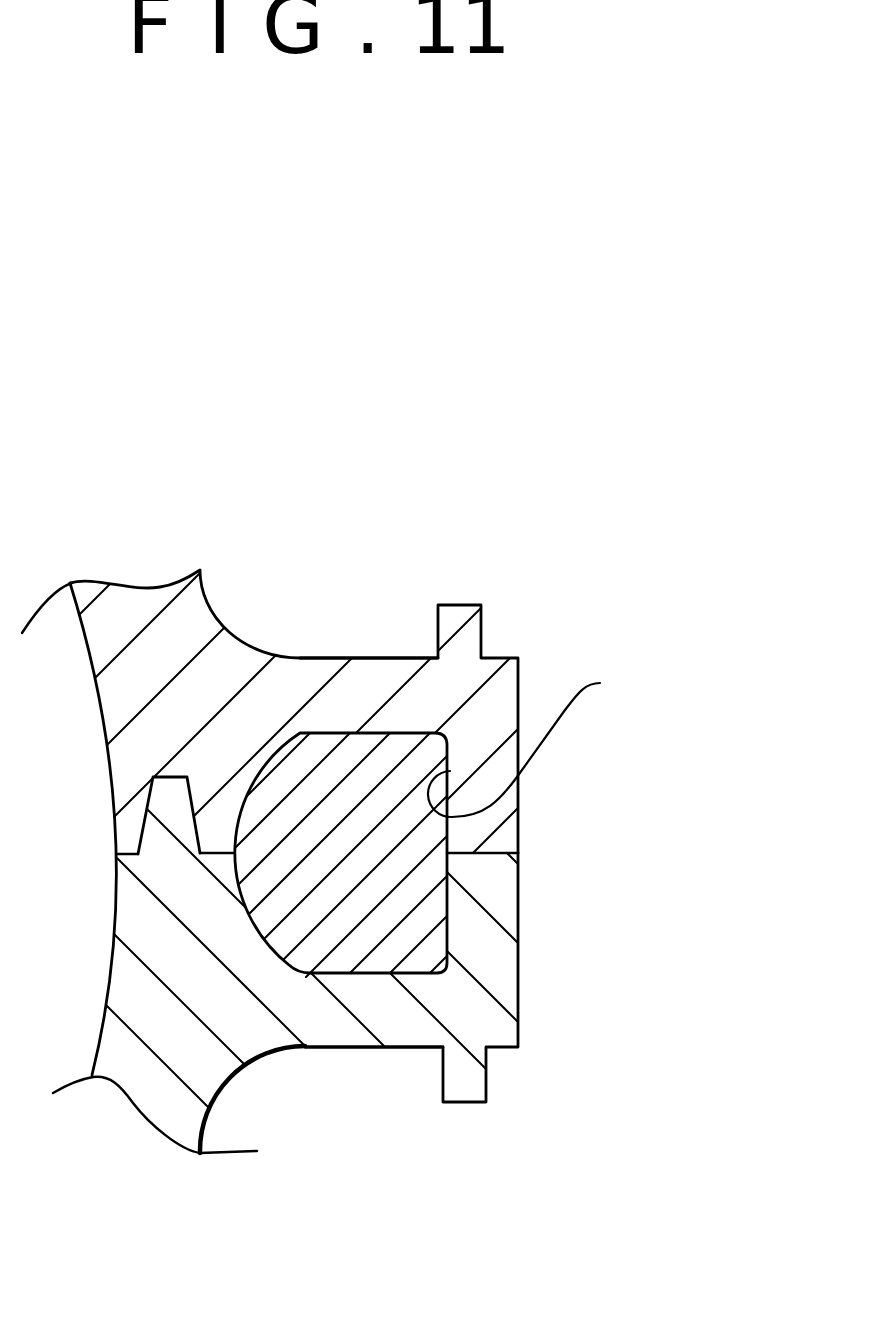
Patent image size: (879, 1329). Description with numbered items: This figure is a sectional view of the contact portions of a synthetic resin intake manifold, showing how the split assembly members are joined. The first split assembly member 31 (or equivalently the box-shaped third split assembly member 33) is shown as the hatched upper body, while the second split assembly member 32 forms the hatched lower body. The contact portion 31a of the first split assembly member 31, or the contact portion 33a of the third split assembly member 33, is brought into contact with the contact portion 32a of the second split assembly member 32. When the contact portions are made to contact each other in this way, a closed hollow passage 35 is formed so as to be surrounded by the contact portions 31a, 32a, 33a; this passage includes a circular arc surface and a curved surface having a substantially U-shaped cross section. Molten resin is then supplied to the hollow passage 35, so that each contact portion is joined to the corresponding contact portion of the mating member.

The first split assembly member 31 is at (328, 737).
The third split assembly member 33 is at (220, 603).
The contact portion 31a is at (530, 576).
The contact portion 33a is at (383, 673).
The hollow passage 35 is at (542, 736).
The second split assembly member 32 is at (292, 1053).
The contact portion 32a is at (340, 1030).